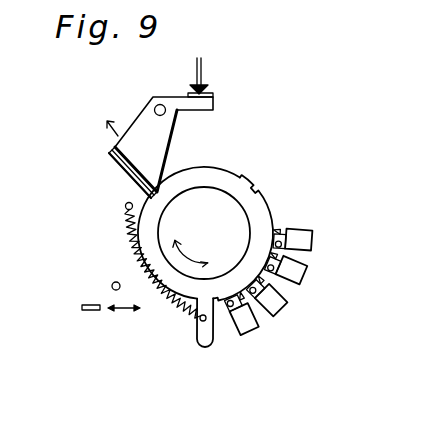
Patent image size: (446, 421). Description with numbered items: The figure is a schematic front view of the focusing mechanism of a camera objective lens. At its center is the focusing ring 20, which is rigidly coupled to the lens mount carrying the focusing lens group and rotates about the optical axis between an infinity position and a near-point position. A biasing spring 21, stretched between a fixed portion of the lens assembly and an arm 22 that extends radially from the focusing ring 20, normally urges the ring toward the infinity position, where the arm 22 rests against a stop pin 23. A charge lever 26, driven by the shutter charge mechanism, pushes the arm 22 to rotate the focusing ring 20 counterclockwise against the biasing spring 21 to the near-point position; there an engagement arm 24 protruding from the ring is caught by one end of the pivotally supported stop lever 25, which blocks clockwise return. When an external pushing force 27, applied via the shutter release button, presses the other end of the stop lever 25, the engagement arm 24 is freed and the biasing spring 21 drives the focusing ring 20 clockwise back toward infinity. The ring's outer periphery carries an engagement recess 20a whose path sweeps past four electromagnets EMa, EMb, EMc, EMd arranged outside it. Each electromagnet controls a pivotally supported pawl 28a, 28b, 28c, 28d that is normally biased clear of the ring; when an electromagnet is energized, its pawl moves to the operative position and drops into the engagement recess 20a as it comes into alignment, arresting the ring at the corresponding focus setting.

The focusing ring 20 is at (175, 187).
The engagement recess 20a is at (249, 192).
The biasing spring 21 is at (125, 233).
The arm 22 is at (197, 338).
The stop pin 23 is at (113, 283).
The engagement arm 24 is at (111, 158).
The stop lever 25 is at (142, 128).
The charge lever 26 is at (93, 312).
The external pushing force 27 is at (200, 62).
The pawl 28a is at (282, 233).
The pawl 28b is at (278, 253).
The pawl 28c is at (264, 288).
The pawl 28d is at (253, 302).
The electromagnet EMa is at (312, 240).
The electromagnet EMb is at (293, 283).
The electromagnet EMc is at (277, 317).
The electromagnet EMd is at (253, 338).